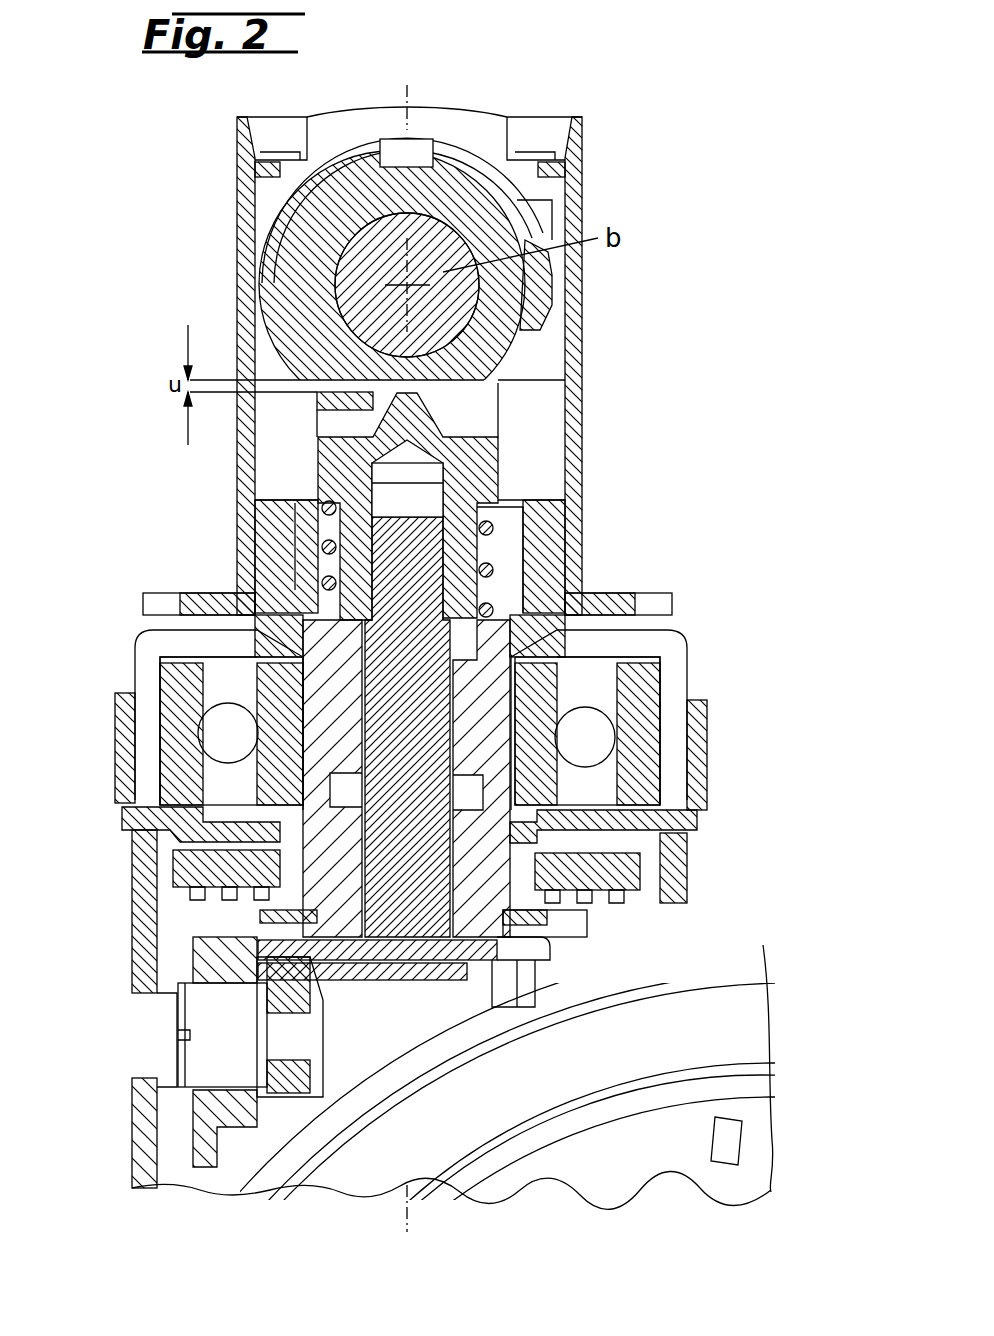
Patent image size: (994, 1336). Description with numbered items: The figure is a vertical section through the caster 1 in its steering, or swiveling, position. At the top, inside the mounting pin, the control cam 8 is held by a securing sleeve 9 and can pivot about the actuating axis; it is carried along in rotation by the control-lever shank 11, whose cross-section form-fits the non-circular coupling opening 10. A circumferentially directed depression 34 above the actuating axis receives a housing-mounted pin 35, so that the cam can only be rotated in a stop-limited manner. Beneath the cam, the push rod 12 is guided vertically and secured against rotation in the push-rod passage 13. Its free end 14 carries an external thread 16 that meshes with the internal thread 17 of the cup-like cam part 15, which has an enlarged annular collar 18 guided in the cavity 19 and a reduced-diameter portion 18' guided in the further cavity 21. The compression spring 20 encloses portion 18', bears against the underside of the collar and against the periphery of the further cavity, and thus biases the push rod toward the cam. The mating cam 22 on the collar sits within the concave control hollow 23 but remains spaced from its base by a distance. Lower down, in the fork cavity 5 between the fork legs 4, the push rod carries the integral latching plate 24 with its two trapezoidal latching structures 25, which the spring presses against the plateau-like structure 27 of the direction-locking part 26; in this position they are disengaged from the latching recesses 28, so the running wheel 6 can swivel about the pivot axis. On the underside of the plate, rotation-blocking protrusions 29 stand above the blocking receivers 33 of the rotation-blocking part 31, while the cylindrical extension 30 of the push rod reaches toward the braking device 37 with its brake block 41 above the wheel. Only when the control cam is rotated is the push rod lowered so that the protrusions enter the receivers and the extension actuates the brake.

The caster 1 is at (628, 156).
The fork legs 4 is at (173, 968).
The fork cavity 5 is at (173, 1160).
The running wheel 6 is at (742, 958).
The control cam 8 is at (265, 252).
The securing sleeve 9 is at (565, 352).
The coupling opening 10 is at (333, 292).
The control-lever shank 11 is at (355, 309).
The push rod 12 is at (410, 668).
The push-rod passage 13 is at (453, 687).
The free end 14 is at (387, 588).
The cam part 15 is at (470, 476).
The external thread 16 is at (340, 537).
The internal thread 17 is at (365, 490).
The annular collar 18 is at (503, 506).
The portion of the cam part 18' is at (586, 545).
The cavity 19 is at (483, 398).
The compression spring 20 is at (490, 567).
The further cavity 21 is at (503, 590).
The mating cam 22 is at (483, 418).
The control hollow 23 is at (548, 320).
The latching plate 24 is at (640, 860).
The latching structures 25 is at (160, 853).
The direction-locking part 26 is at (152, 820).
The plateau-like structure 27 is at (573, 833).
The latching recesses 28 is at (230, 847).
The rotation-blocking protrusions 29 is at (283, 892).
The extension 30 is at (483, 930).
The rotation-blocking part 31 is at (533, 930).
The blocking receivers 33 is at (270, 920).
The depression 34 is at (505, 188).
The housing-mounted pin 35 is at (415, 148).
The braking device 37 is at (218, 1060).
The brake block 41 is at (383, 1015).